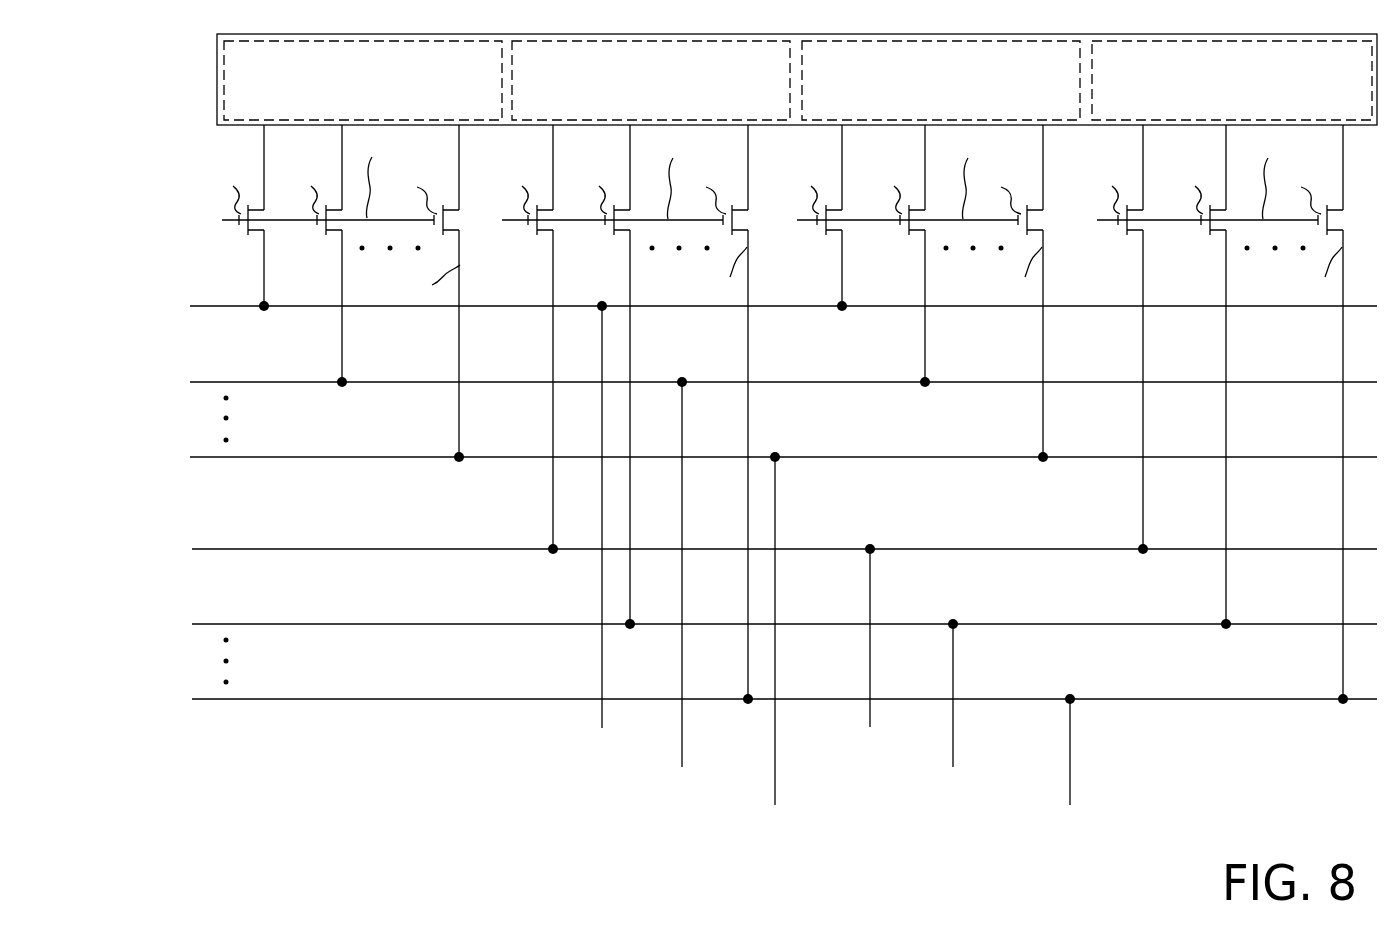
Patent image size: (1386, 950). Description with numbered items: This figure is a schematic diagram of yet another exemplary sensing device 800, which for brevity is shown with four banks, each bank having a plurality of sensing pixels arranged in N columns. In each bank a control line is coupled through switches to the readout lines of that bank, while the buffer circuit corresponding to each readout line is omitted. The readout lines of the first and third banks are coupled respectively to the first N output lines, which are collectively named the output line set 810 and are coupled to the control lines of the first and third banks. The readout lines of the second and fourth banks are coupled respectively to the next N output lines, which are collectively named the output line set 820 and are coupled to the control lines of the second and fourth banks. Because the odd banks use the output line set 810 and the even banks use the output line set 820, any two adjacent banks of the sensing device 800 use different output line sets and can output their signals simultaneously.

The sensing device 800 is at (63, 70).
The output line set 810 is at (87, 292).
The output line set 820 is at (87, 517).